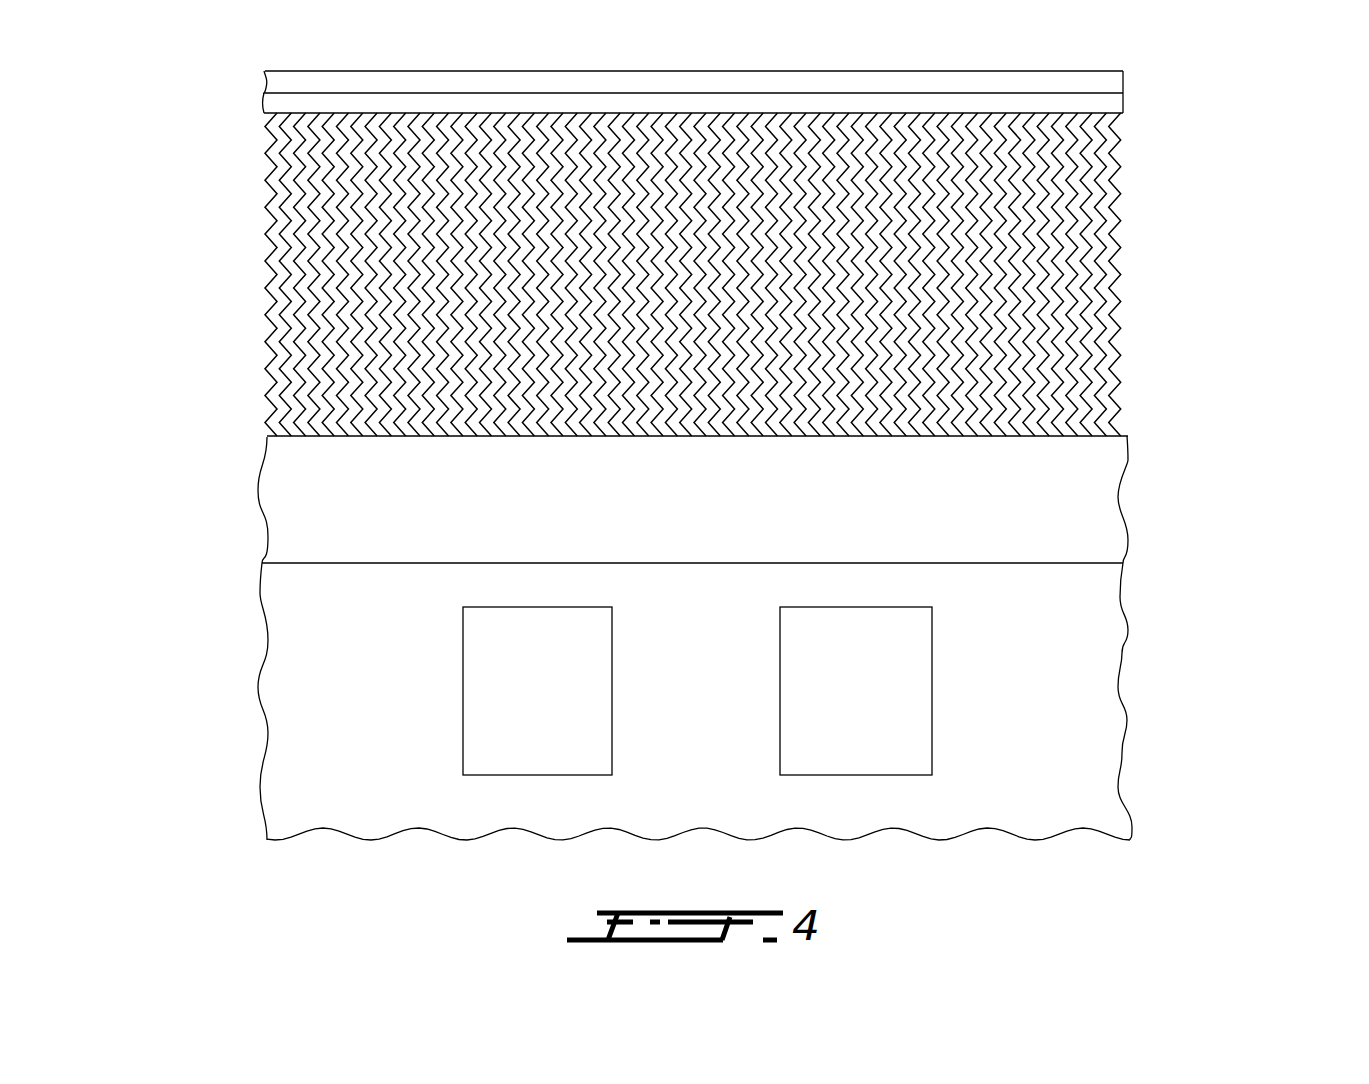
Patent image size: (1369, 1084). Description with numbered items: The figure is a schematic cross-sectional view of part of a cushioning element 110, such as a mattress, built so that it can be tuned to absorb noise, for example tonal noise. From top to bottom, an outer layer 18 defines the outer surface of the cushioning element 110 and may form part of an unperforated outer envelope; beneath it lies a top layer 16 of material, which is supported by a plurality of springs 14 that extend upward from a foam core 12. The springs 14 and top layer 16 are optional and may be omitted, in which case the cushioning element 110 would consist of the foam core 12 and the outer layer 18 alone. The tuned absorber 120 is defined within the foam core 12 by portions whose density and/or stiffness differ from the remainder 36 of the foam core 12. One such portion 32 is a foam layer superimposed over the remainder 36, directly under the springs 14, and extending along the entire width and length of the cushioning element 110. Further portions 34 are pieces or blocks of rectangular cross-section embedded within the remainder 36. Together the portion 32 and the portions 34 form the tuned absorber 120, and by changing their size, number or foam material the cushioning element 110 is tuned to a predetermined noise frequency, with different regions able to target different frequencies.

The cushioning element 110 is at (701, 476).
The outer layer 18 is at (1110, 82).
The top layer 16 is at (1110, 105).
The springs 14 is at (1118, 287).
The portion of the foam core 32 is at (1097, 460).
The foam core 12 is at (753, 648).
The tuned absorber 120 is at (801, 648).
The remainder of the foam core 36 is at (735, 731).
The portions of the foam core 34 is at (815, 750).